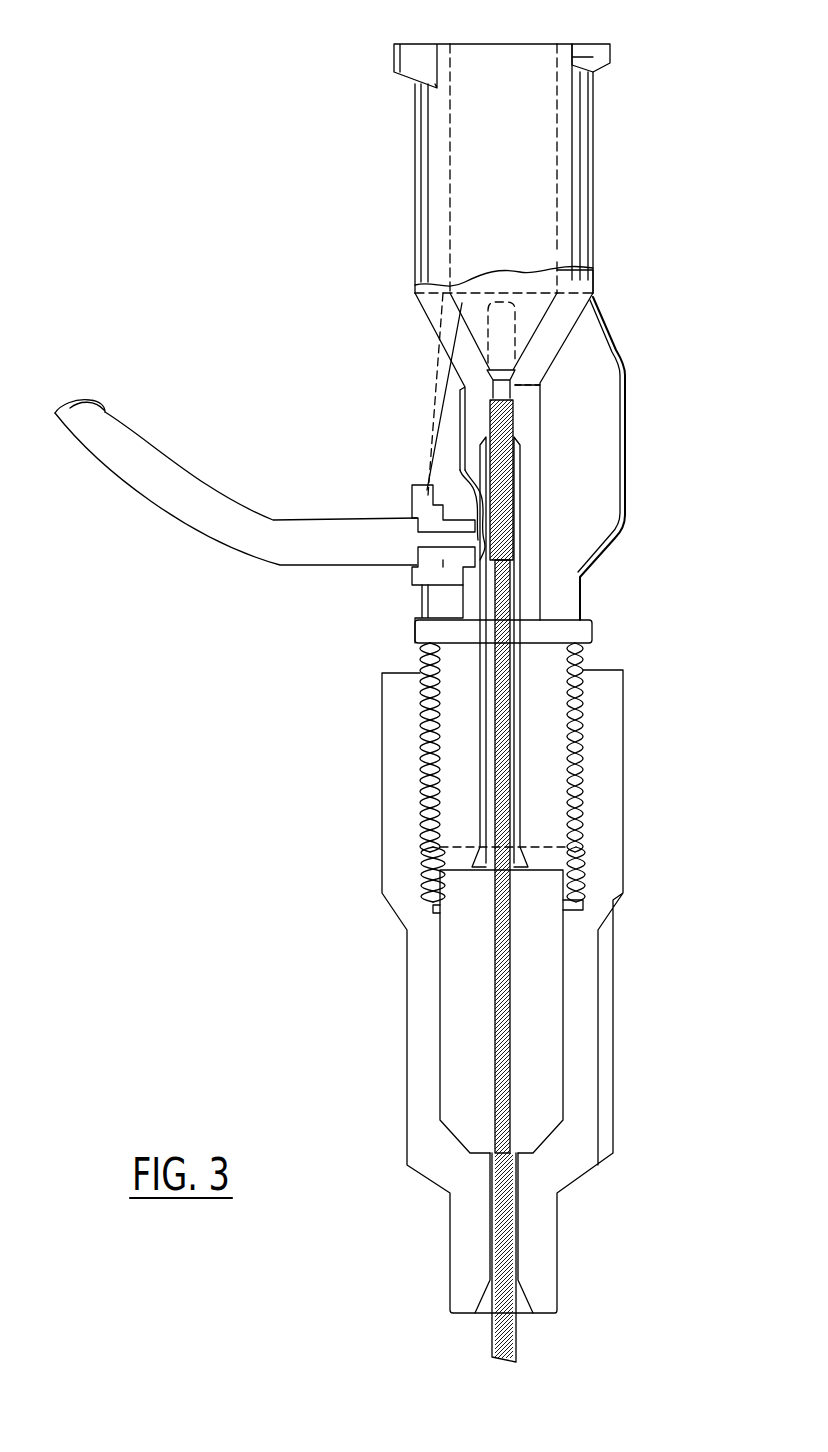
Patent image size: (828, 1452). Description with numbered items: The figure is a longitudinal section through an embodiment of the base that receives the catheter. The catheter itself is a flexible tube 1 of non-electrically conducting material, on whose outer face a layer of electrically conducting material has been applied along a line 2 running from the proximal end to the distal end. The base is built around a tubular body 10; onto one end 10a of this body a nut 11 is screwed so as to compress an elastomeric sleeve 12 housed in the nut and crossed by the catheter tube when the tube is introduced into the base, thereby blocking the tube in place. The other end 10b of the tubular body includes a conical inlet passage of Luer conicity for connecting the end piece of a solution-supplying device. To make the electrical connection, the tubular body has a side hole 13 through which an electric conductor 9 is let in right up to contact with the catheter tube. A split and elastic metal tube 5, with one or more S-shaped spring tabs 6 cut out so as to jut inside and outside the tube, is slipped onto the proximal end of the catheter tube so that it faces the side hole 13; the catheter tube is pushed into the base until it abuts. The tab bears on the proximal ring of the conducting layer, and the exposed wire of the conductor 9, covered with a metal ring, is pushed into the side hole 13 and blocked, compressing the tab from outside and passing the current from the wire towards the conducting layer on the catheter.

The flexible tube 1 is at (513, 965).
The line 2 is at (500, 1328).
The split and elastic metal tube 5 is at (540, 460).
The spring tab 6 is at (487, 500).
The electric conductor 9 is at (457, 540).
The tubular body 10 is at (575, 163).
The end of the tubular body 10a is at (545, 758).
The other end of the tubular body 10b is at (512, 88).
The nut 11 is at (458, 522).
The elastomeric sleeve 12 is at (540, 1058).
The side hole 13 is at (413, 516).